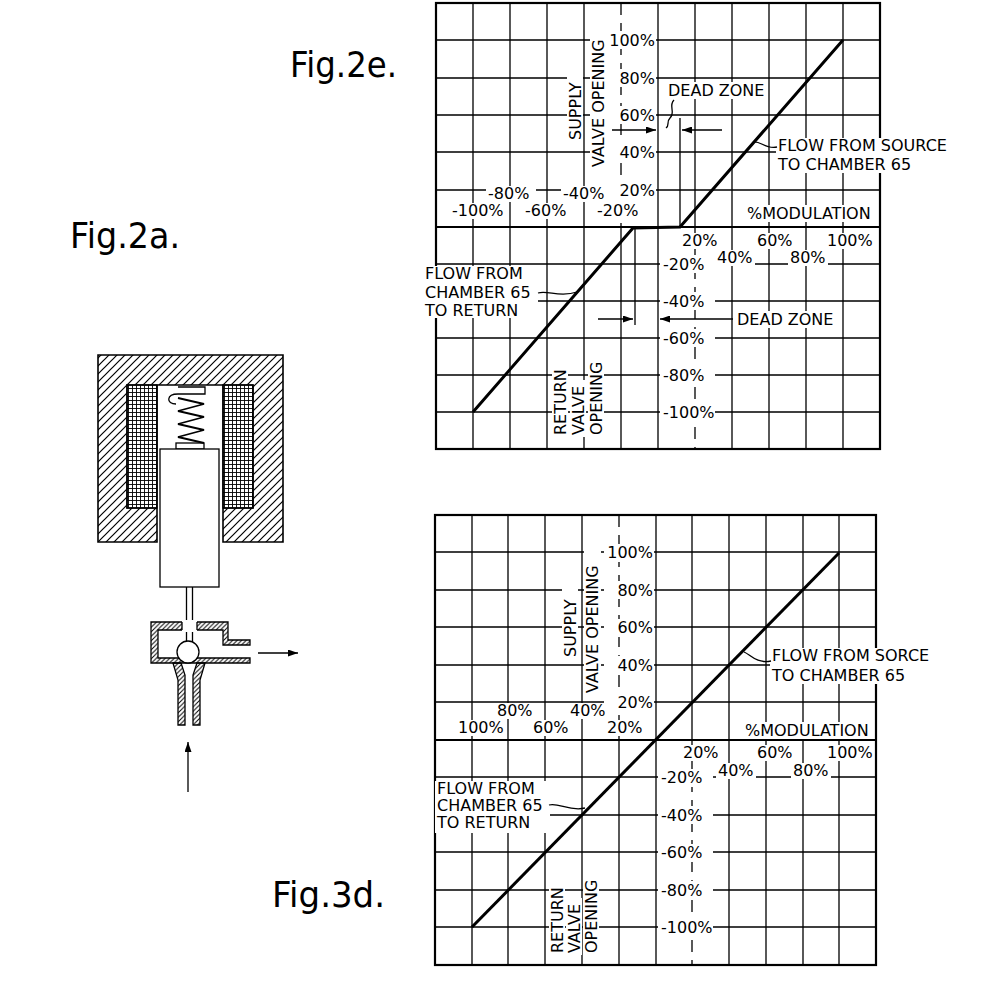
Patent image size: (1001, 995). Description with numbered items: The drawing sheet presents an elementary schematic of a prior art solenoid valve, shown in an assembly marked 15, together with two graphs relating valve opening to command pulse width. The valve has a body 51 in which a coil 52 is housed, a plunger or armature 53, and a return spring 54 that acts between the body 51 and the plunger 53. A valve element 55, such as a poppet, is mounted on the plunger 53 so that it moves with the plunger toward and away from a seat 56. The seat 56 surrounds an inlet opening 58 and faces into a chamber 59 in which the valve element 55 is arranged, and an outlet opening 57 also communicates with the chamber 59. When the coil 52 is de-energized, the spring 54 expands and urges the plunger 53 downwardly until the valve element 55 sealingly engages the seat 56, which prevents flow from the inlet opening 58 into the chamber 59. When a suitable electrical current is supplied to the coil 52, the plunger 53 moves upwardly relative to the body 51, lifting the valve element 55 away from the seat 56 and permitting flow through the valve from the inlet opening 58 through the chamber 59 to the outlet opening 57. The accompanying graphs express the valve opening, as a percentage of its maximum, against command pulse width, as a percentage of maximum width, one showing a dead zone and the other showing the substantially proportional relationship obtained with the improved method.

The solenoid valve assembly 15 is at (262, 340).
The body 51 is at (273, 402).
The coil 52 is at (247, 448).
The plunger or armature 53 is at (210, 562).
The return spring 54 is at (170, 386).
The valve element 55 is at (197, 640).
The seat 56 is at (180, 664).
The outlet opening 57 is at (237, 647).
The inlet opening 58 is at (192, 707).
The chamber 59 is at (165, 642).